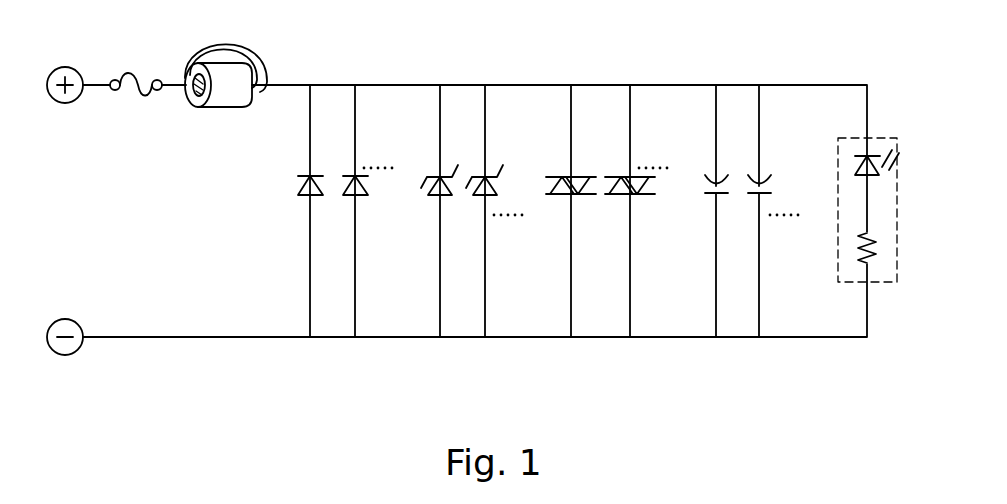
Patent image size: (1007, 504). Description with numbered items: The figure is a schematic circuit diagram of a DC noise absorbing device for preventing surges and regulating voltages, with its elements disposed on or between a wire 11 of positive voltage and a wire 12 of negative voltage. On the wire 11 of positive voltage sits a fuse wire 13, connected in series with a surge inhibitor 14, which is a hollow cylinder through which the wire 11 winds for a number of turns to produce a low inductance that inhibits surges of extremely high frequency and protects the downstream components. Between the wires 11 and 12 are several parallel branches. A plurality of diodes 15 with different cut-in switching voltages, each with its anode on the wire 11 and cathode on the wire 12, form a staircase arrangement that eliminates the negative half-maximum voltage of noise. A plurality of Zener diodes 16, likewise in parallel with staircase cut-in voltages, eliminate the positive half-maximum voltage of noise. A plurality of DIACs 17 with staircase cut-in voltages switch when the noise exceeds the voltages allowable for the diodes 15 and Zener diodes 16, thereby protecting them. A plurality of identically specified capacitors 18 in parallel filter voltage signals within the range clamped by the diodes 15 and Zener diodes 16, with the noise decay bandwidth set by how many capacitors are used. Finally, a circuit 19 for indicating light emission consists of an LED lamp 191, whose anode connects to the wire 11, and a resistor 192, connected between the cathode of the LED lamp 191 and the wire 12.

The wire of positive voltage 11 is at (93, 82).
The wire of negative voltage 12 is at (158, 339).
The fuse wire 13 is at (132, 93).
The surge inhibitor 14 is at (222, 93).
The diodes 15 is at (302, 191).
The Zener diodes 16 is at (435, 174).
The DIACs 17 is at (560, 196).
The capacitors 18 is at (705, 189).
The circuit for indicating light emission 19 is at (862, 212).
The LED lamp 191 is at (873, 155).
The resistor 192 is at (867, 264).